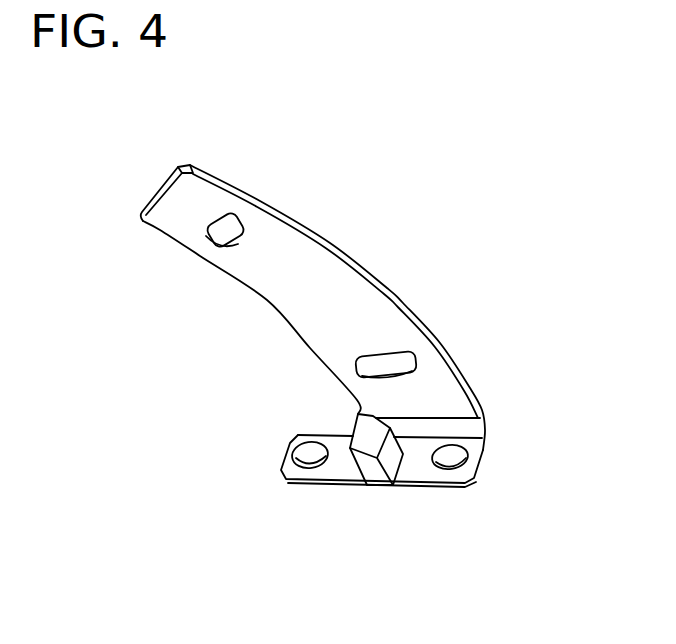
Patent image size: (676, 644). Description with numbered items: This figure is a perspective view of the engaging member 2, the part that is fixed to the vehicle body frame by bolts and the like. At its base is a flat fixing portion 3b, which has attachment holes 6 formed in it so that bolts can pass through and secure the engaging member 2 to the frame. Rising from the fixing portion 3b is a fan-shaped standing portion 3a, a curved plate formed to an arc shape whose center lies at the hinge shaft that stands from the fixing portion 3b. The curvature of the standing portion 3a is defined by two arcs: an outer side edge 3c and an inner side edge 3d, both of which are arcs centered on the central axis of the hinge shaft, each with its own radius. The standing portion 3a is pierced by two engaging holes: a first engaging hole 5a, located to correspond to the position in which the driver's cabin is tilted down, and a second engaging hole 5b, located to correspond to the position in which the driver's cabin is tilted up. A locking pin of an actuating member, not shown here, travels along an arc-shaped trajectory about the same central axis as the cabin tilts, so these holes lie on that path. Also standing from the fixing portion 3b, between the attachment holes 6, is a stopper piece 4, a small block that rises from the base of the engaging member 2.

The engaging member 2 is at (526, 168).
The standing portion 3a is at (283, 262).
The fixing portion 3b is at (415, 468).
The outer side edge 3c is at (363, 272).
The inner side edge 3d is at (289, 321).
The stopper piece 4 is at (373, 470).
The first engaging hole 5a is at (368, 377).
The second engaging hole 5b is at (218, 248).
The attachment holes 6 is at (306, 459).